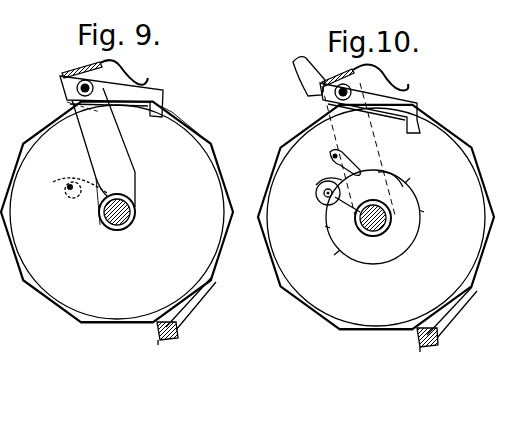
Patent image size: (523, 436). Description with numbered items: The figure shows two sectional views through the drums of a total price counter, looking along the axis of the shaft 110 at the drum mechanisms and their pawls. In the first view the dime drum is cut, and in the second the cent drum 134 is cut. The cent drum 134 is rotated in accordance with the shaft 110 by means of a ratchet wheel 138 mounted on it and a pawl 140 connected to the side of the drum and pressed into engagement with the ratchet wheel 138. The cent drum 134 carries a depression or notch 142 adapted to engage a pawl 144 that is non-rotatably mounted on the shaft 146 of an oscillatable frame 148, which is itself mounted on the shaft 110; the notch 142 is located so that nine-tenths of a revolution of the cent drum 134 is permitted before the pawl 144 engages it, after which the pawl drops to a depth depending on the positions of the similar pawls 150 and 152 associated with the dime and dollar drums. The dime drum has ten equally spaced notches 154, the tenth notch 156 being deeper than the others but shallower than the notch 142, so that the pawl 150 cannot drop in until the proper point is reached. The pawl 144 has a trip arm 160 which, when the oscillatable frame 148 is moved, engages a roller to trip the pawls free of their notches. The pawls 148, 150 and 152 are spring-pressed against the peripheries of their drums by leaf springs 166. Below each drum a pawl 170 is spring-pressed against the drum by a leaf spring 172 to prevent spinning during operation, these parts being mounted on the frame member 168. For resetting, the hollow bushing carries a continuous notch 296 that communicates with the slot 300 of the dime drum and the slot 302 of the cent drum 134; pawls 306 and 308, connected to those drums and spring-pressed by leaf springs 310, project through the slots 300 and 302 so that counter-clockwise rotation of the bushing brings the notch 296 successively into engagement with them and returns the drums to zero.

In FIG. 9, the shaft 110 is at (134, 207).
In FIG. 10, the shaft 110 is at (360, 230).
In FIG. 10, the cent drum 134 is at (370, 333).
In FIG. 10, the ratchet wheel 138 is at (393, 247).
In FIG. 10, the pawl 140 is at (343, 167).
In FIG. 10, the notch 142 is at (423, 128).
In FIG. 10, the pawl 144 is at (413, 100).
In FIG. 10, the shaft 146 is at (330, 100).
In FIG. 9, the oscillatable frame 148 is at (70, 73).
In FIG. 10, the oscillatable frame 148 is at (330, 80).
In FIG. 9, the pawl 150 is at (157, 96).
In FIG. 9, the pawl 152 is at (120, 324).
In FIG. 9, the notches 154 is at (206, 140).
In FIG. 9, the tenth notch 156 is at (172, 112).
In FIG. 10, the trip arm 160 is at (305, 66).
In FIG. 9, the leaf springs 166 is at (136, 80).
In FIG. 10, the leaf springs 166 is at (390, 75).
In FIG. 9, the frame member 168 is at (158, 340).
In FIG. 10, the frame member 168 is at (420, 352).
In FIG. 9, the pawl 170 is at (192, 314).
In FIG. 10, the pawl 170 is at (440, 323).
In FIG. 9, the leaf spring 172 is at (182, 328).
In FIG. 10, the leaf spring 172 is at (438, 340).
In FIG. 9, the continuous notch 296 is at (100, 225).
In FIG. 9, the slot 300 is at (116, 195).
In FIG. 10, the slot 302 is at (403, 187).
In FIG. 9, the pawl 306 is at (73, 197).
In FIG. 10, the pawl 308 is at (330, 207).
In FIG. 9, the leaf springs 310 is at (67, 180).
In FIG. 10, the leaf springs 310 is at (310, 183).